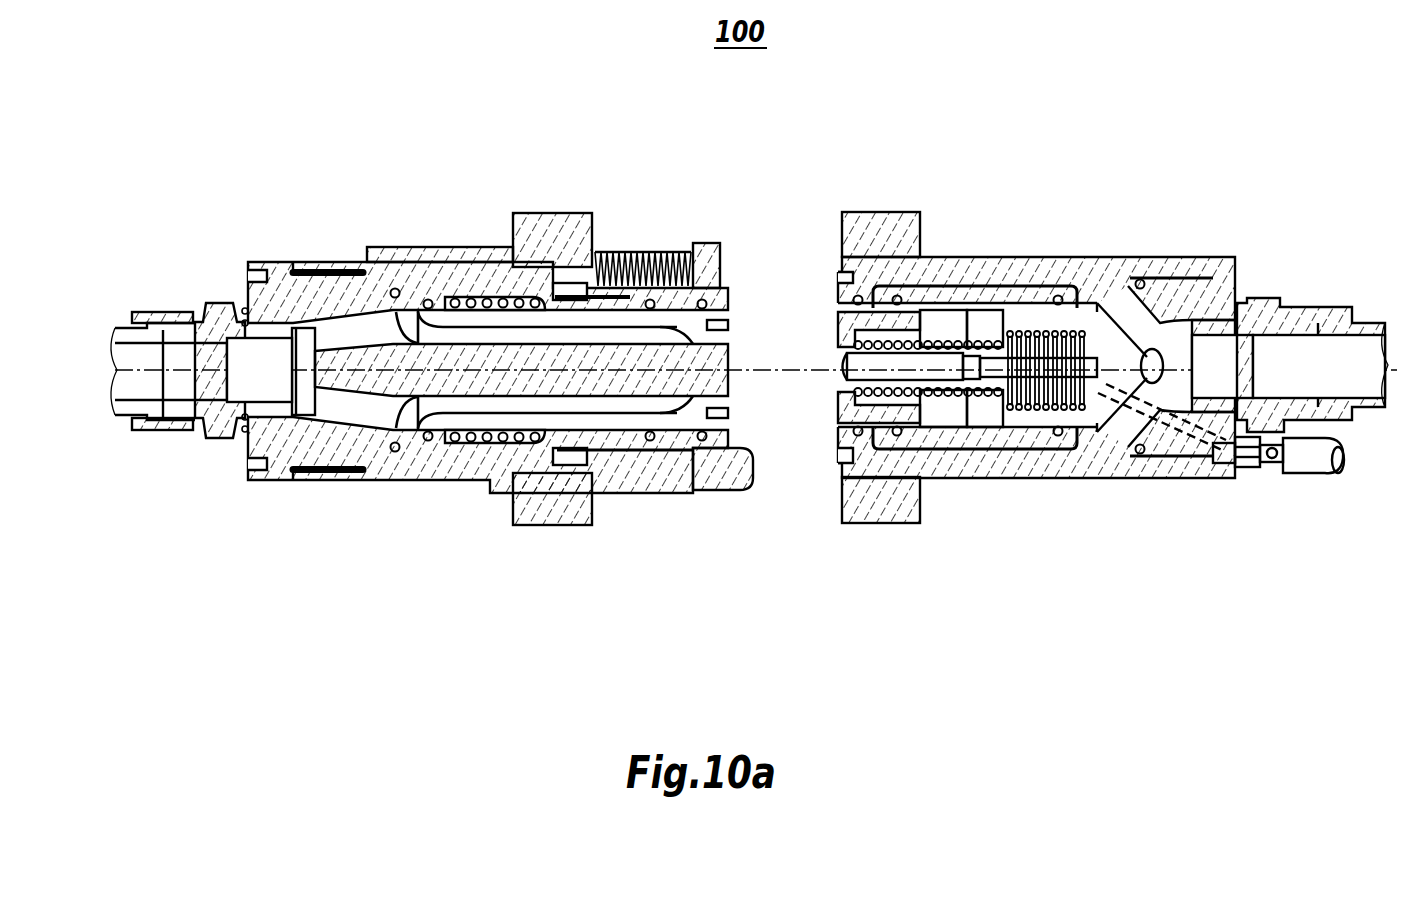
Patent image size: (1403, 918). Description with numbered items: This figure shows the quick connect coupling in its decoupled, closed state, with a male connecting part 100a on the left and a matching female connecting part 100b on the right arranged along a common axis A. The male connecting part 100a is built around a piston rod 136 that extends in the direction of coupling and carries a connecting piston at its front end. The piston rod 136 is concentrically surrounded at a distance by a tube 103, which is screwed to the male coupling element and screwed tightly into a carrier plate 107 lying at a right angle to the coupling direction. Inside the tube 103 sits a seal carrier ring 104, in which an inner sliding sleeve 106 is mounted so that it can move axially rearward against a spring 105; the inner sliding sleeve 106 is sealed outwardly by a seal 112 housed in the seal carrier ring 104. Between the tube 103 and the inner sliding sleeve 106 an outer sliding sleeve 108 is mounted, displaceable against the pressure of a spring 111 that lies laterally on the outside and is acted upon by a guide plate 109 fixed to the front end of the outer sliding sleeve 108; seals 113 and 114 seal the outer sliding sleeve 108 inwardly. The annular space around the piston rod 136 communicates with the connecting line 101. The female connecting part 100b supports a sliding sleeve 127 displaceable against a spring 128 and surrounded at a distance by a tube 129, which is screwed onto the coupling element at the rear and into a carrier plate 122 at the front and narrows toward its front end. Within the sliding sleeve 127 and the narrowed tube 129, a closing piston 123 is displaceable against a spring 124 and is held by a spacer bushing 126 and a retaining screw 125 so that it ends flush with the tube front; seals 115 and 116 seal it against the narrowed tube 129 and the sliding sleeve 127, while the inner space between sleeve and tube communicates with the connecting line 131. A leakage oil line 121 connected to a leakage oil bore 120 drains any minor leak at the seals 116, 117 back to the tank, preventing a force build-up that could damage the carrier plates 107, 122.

The male connecting part 100a is at (350, 448).
The female connecting part 100b is at (1188, 292).
The connecting line 101 is at (222, 303).
The tube 103 is at (332, 270).
The seal carrier ring 104 is at (418, 283).
The spring 105 is at (480, 298).
The inner sliding sleeve 106 is at (543, 447).
The carrier plate 107 is at (529, 232).
The outer sliding sleeve 108 is at (563, 300).
The guide plate 109 is at (715, 248).
The spring 111 is at (633, 256).
The seal 112 is at (432, 439).
The seal 113 is at (650, 440).
The seal 114 is at (700, 445).
The seal 115 is at (856, 436).
The seal 116 is at (897, 436).
The seal 117 is at (1057, 436).
The leakage oil bore 120 is at (1163, 458).
The leakage oil line 121 is at (1262, 468).
The carrier plate 122 is at (870, 230).
The closing piston 123 is at (908, 316).
The spring 124 is at (947, 340).
The retaining screw 125 is at (971, 395).
The spacer bushing 126 is at (993, 343).
The sliding sleeve 127 is at (1037, 300).
The spring 128 is at (1072, 436).
The tube 129 is at (1134, 270).
The connecting line 131 is at (1262, 313).
The piston rod 136 is at (507, 372).
The axis A is at (1395, 366).